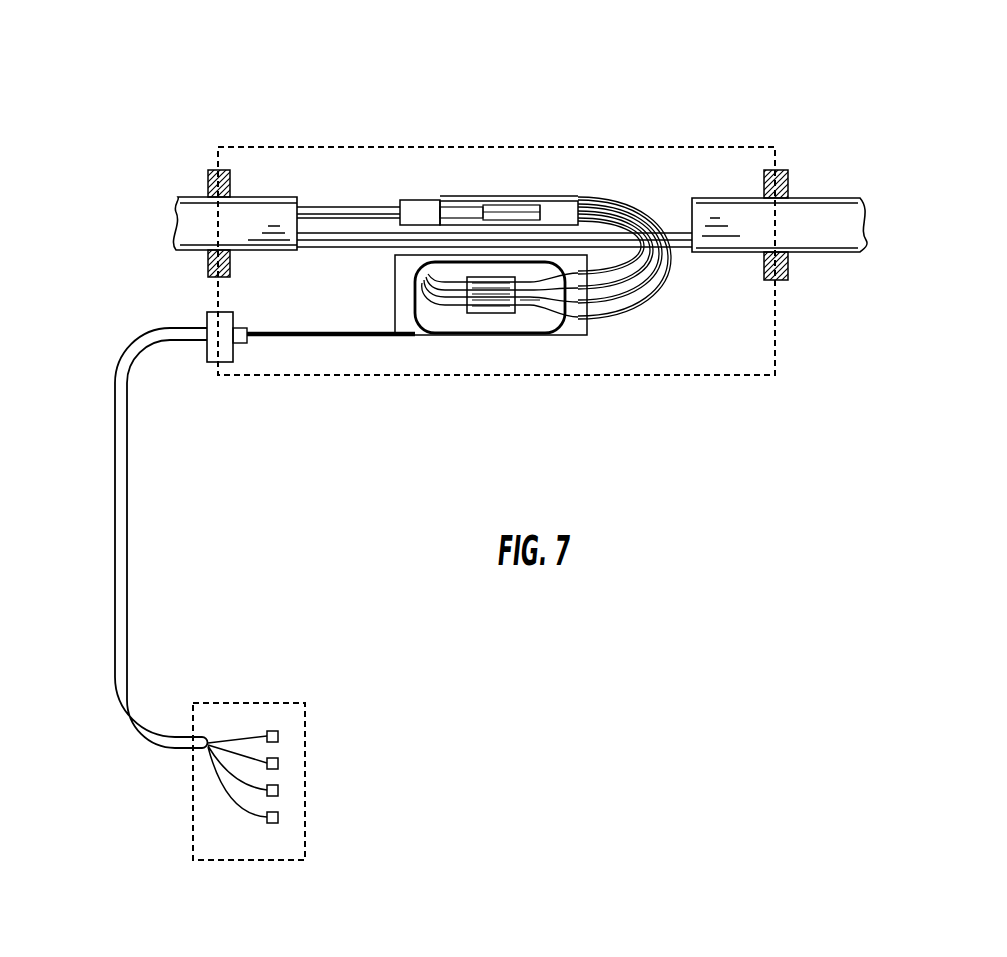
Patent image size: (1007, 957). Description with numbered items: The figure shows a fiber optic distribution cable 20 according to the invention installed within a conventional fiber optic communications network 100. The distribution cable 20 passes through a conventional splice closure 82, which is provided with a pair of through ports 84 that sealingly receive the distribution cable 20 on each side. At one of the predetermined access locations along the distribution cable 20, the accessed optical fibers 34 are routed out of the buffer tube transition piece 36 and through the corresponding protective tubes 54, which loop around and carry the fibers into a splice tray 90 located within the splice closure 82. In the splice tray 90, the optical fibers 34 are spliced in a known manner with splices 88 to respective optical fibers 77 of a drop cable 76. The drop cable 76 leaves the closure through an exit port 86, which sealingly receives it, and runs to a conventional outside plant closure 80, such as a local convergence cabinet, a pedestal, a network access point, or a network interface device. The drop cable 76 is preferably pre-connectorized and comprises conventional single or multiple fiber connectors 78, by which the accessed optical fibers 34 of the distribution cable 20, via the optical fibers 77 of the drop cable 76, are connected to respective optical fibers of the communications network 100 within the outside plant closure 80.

The fiber optic communications network 100 is at (602, 80).
The fiber optic distribution cable 20 is at (840, 195).
The through ports 84 is at (206, 182).
The buffer tube transition piece 36 is at (413, 200).
The protective tubes 54 is at (657, 283).
The splice closure 82 is at (777, 362).
The splice tray 90 is at (570, 335).
The optical fibers of the drop cable 77 is at (442, 312).
The splices 88 is at (477, 313).
The optical fibers 34 is at (523, 313).
The exit port 86 is at (222, 358).
The drop cable 76 is at (117, 478).
The outside plant closure 80 is at (275, 749).
The fiber connectors 78 is at (278, 816).